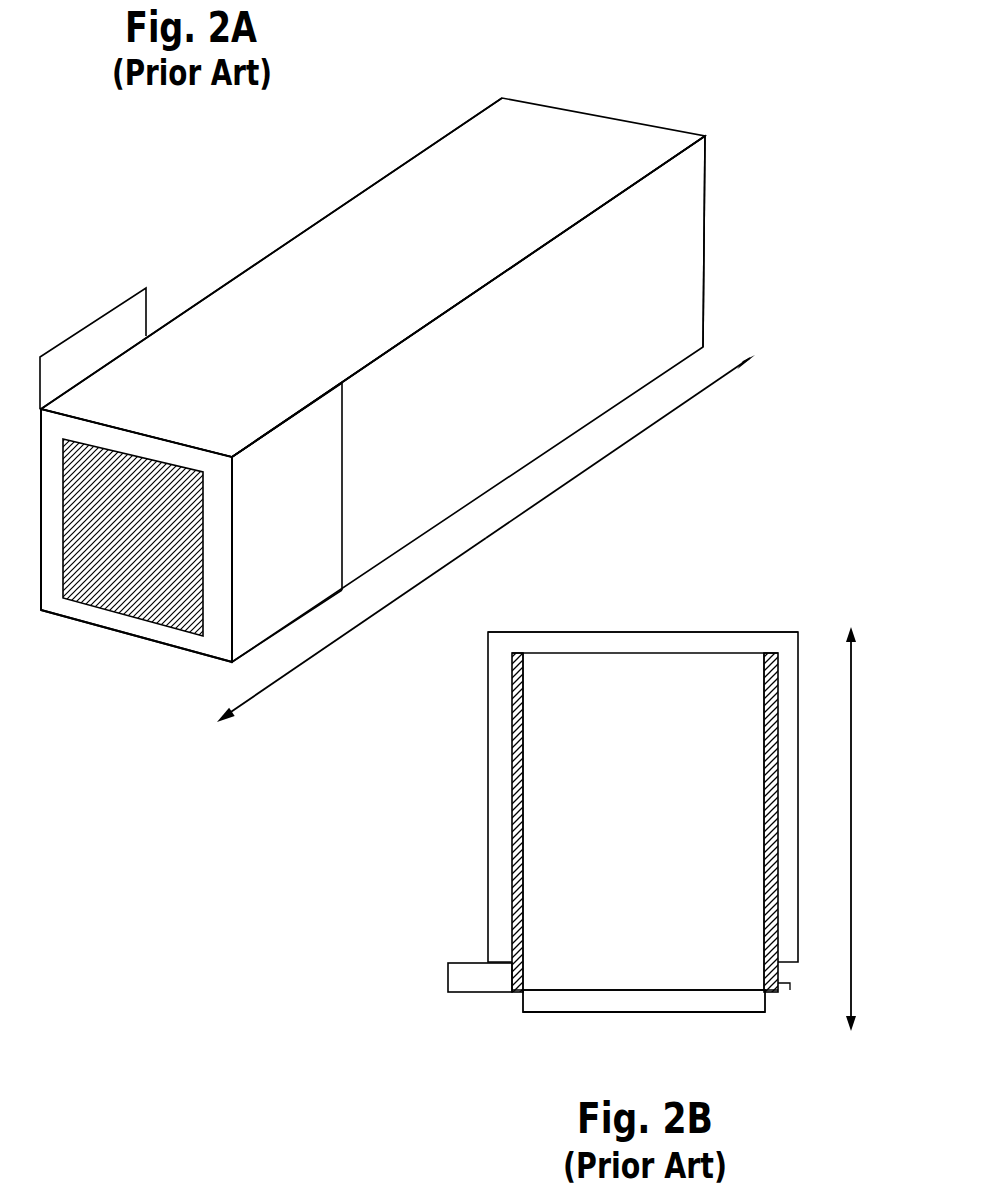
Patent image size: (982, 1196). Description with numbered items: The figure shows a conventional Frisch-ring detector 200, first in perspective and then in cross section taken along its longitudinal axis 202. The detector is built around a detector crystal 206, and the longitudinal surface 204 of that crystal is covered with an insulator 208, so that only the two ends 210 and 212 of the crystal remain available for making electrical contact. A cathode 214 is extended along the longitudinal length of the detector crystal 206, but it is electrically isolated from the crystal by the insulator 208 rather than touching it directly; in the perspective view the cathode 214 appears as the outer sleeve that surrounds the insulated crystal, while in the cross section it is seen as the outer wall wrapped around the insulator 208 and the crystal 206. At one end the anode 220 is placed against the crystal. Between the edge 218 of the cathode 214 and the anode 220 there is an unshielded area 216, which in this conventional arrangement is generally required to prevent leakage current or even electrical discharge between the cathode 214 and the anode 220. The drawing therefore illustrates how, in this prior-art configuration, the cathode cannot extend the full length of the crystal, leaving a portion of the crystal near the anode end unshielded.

In FIG. 2A, the conventional Frisch-ring detector 200 is at (225, 189).
In FIG. 2B, the conventional Frisch-ring detector 200 is at (790, 596).
In FIG. 2A, the longitudinal axis 202 is at (521, 516).
In FIG. 2B, the longitudinal axis 202 is at (860, 772).
In FIG. 2A, the longitudinal surface 204 is at (331, 205).
In FIG. 2B, the detector crystal 206 is at (686, 695).
In FIG. 2A, the insulator 208 is at (181, 410).
In FIG. 2B, the insulator 208 is at (511, 991).
In FIG. 2A, the end 210 is at (727, 224).
In FIG. 2B, the end 210 is at (644, 625).
In FIG. 2A, the end 212 is at (109, 696).
In FIG. 2B, the end 212 is at (667, 1020).
In FIG. 2A, the cathode 214 is at (396, 253).
In FIG. 2B, the cathode 214 is at (668, 640).
In FIG. 2A, the unshielded area 216 is at (90, 323).
In FIG. 2B, the unshielded area 216 is at (448, 978).
In FIG. 2A, the edge 218 is at (135, 590).
In FIG. 2B, the edge 218 is at (780, 986).
In FIG. 2B, the anode 220 is at (570, 1000).